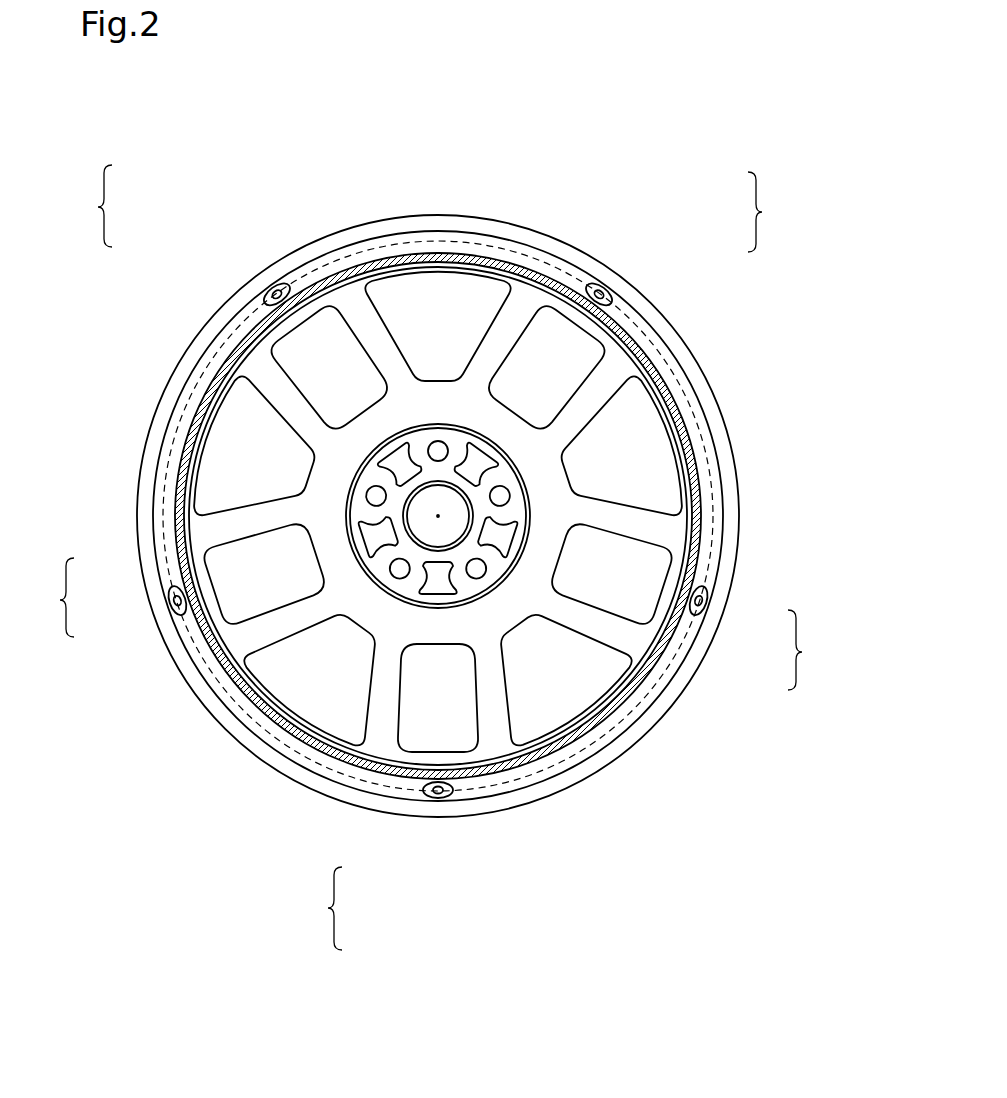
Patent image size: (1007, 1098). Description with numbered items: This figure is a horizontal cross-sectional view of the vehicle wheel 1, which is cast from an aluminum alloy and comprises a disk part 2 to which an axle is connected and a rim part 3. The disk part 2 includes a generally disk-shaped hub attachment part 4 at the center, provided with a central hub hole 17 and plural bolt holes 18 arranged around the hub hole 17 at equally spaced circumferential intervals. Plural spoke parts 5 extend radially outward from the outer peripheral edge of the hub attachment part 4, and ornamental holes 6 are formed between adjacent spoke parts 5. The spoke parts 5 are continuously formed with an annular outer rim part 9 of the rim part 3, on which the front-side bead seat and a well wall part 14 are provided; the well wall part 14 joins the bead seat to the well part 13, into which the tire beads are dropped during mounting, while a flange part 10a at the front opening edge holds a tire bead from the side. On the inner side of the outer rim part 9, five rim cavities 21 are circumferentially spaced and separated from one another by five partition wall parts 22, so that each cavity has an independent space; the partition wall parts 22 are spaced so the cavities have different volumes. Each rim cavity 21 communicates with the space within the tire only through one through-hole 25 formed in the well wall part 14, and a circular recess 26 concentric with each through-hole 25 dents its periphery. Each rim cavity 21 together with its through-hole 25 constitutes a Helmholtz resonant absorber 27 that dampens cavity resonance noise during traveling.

The vehicle wheel 1 is at (713, 108).
The disk part 2 is at (233, 525).
The rim part 3 is at (694, 366).
The hub attachment part 4 is at (404, 580).
The spoke parts 5 is at (350, 315).
The ornamental holes 6 is at (448, 292).
The outer rim part 9 is at (212, 342).
The flange part 10a is at (617, 763).
The well part 13 is at (395, 257).
The well wall part 14 is at (484, 238).
The hub hole 17 is at (445, 538).
The bolt holes 18 is at (506, 494).
The rim cavities 21 is at (637, 304).
The partition wall parts 22 is at (428, 243).
The through-hole 25 is at (612, 296).
The recess 26 is at (603, 289).
The Helmholtz resonant absorbers 27 is at (433, 557).